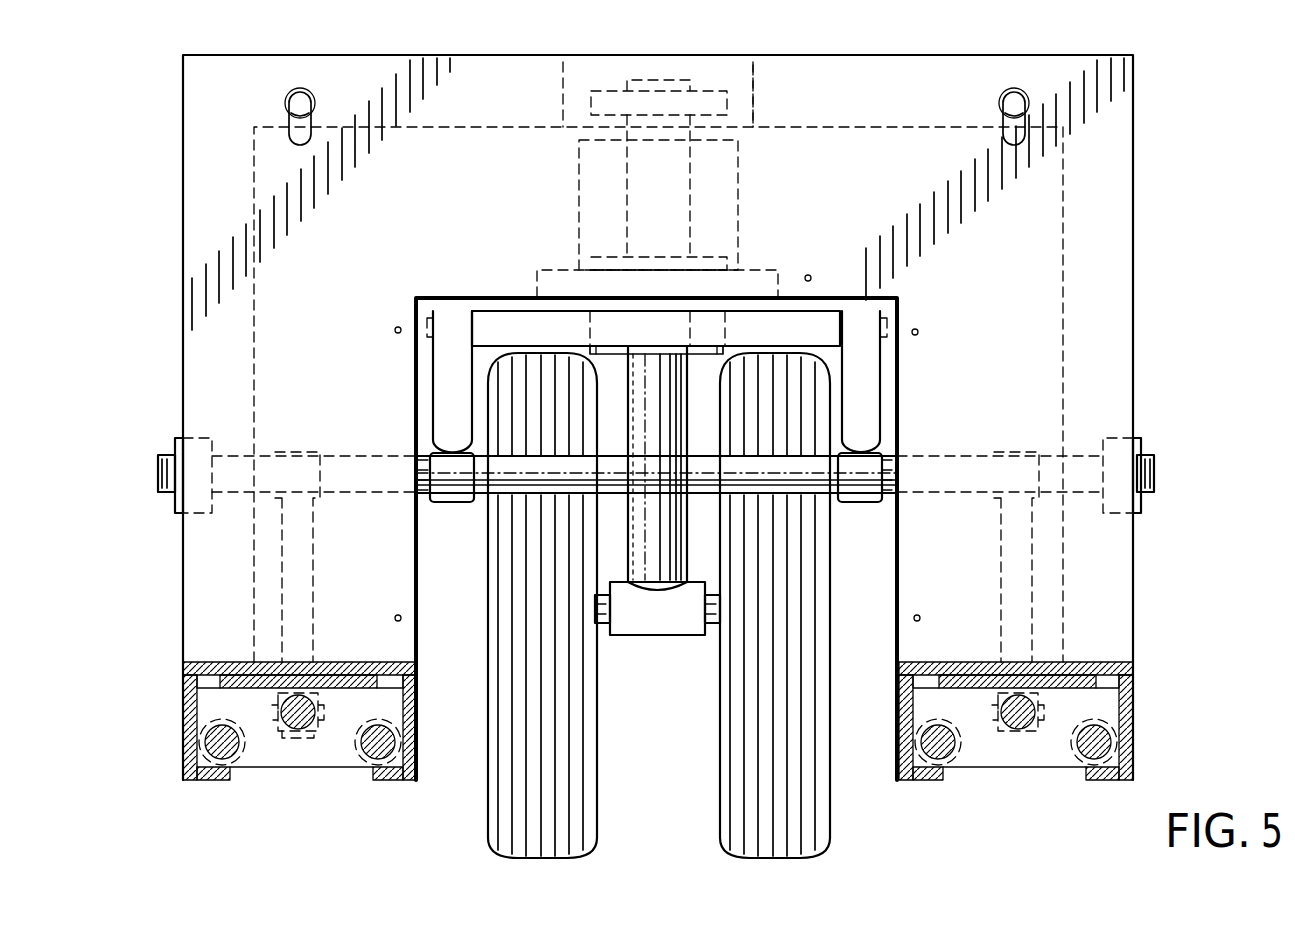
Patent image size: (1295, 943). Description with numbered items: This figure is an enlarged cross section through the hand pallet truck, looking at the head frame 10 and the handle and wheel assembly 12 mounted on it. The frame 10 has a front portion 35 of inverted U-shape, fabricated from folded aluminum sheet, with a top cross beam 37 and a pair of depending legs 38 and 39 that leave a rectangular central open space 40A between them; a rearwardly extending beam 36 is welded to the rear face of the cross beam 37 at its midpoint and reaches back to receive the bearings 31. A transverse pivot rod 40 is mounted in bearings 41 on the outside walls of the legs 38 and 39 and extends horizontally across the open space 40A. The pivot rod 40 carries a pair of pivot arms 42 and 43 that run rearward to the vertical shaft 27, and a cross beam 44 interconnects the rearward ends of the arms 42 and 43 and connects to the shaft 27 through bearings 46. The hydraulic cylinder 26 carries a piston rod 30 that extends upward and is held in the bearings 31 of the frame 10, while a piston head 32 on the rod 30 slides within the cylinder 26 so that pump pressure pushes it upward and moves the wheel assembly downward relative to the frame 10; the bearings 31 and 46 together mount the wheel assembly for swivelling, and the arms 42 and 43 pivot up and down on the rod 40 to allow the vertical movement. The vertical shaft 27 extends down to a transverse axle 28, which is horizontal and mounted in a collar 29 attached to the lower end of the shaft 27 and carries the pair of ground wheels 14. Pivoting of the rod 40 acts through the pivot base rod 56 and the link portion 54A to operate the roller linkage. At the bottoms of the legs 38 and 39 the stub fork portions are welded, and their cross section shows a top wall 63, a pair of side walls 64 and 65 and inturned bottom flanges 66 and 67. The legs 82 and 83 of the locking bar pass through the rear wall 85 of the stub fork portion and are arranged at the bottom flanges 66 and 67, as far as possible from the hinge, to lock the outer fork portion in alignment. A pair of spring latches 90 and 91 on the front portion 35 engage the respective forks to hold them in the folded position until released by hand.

The head frame 10 is at (1170, 220).
The handle and wheel assembly 12 is at (706, 602).
The ground wheels 14 is at (733, 728).
The cylinder 26 is at (743, 192).
The vertical shaft 27 is at (687, 533).
The transverse axle 28 is at (603, 625).
The collar 29 is at (660, 627).
The piston rod 30 is at (645, 193).
The bearings 31 is at (591, 101).
The piston head 32 is at (605, 250).
The front portion 35 is at (1140, 82).
The rearwardly extending beam 36 is at (756, 93).
The top cross beam 37 is at (875, 55).
The depending leg 38 is at (183, 545).
The depending leg 39 is at (1133, 397).
The transverse pivot rod 40 is at (363, 465).
The central open space 40A is at (890, 370).
The bearings 41 is at (200, 435).
The pivot arm 42 is at (447, 363).
The pivot arm 43 is at (862, 420).
The cross beam 44 is at (497, 323).
The bearings 46 is at (615, 358).
The link portion 54A is at (317, 737).
The pivot base rod 56 is at (275, 740).
The top wall 63 is at (210, 662).
The side wall 64 is at (182, 707).
The side wall 65 is at (417, 713).
The inturned bottom flange 66 is at (222, 782).
The inturned bottom flange 67 is at (400, 782).
The leg of locking bar 82 is at (203, 742).
The leg of locking bar 83 is at (417, 742).
The rear wall 85 is at (352, 698).
The spring latch 90 is at (983, 105).
The spring latch 91 is at (269, 105).